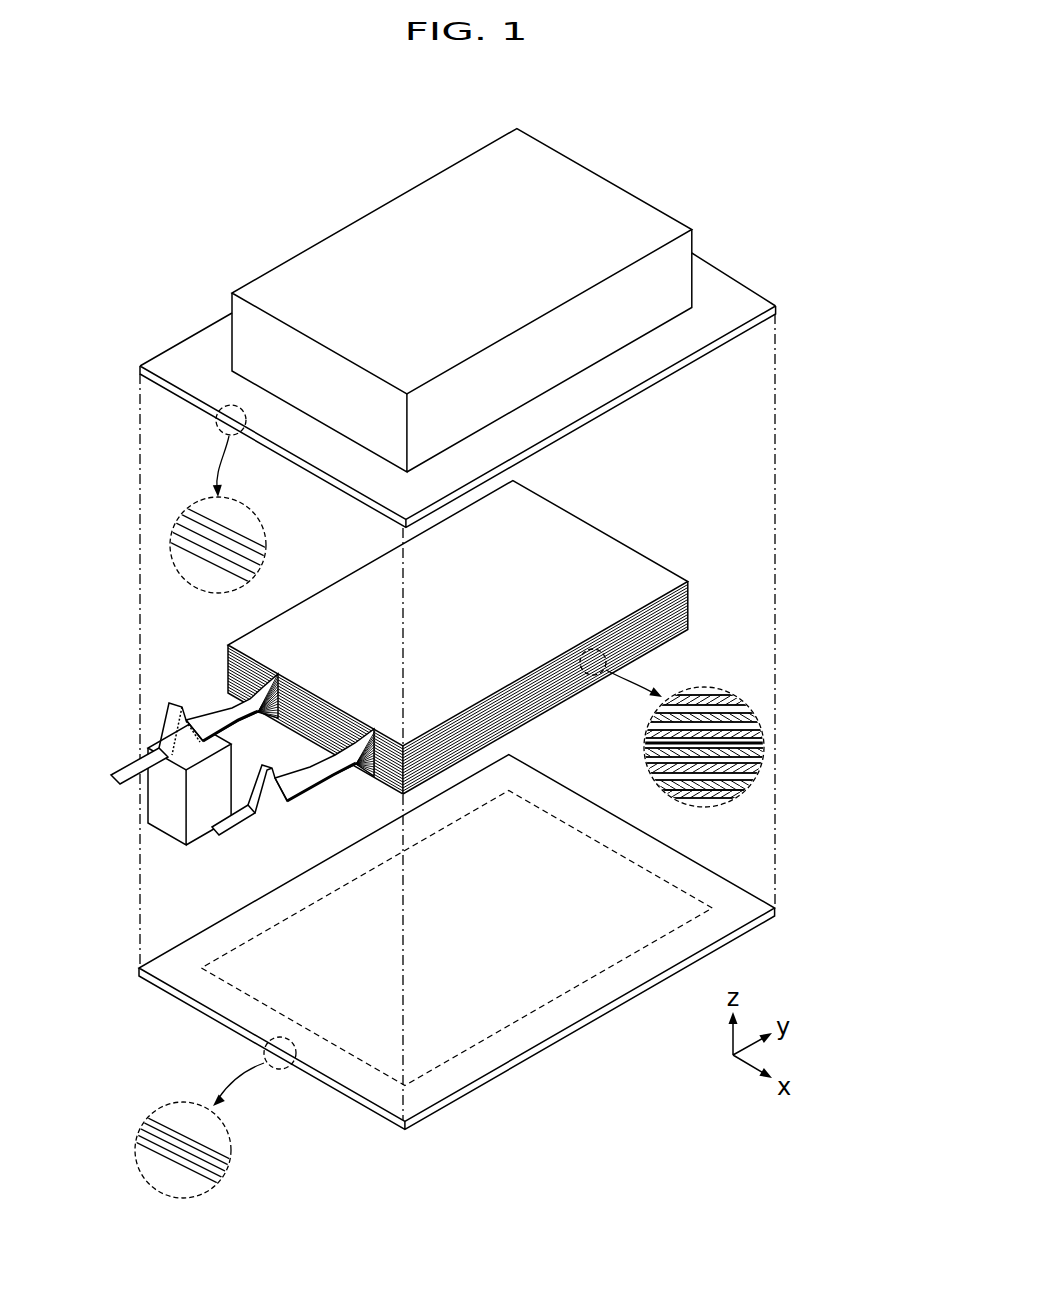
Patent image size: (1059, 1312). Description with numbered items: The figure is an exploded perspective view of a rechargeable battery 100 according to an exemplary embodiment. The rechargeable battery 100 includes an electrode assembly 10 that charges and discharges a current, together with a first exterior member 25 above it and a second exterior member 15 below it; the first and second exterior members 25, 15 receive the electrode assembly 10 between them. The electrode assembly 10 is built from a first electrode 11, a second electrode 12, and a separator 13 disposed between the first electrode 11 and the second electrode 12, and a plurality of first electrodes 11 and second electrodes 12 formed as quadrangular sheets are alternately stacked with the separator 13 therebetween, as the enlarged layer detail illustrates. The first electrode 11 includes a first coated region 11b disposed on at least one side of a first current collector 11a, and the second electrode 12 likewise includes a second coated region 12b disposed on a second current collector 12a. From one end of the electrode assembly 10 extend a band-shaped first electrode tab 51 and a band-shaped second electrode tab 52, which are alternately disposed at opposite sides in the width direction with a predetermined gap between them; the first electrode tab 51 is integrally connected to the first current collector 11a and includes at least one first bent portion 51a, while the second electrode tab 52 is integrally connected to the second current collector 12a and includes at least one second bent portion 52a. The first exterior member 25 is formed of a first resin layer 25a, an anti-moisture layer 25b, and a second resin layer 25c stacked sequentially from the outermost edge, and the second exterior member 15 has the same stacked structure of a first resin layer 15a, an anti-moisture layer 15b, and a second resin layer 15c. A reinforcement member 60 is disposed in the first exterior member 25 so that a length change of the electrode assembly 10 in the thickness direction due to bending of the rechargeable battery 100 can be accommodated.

The rechargeable battery 100 is at (261, 168).
The electrode assembly 10 is at (614, 524).
The first electrode 11 is at (824, 667).
The first current collector 11a is at (758, 716).
The first coated region 11b is at (758, 735).
The second electrode 12 is at (829, 743).
The second current collector 12a is at (760, 753).
The second coated region 12b is at (760, 760).
The separator 13 is at (648, 742).
The second exterior member 15 is at (306, 1138).
The first resin layer 15a is at (212, 1184).
The anti-moisture layer 15b is at (228, 1172).
The second resin layer 15c is at (222, 1158).
The first exterior member 25 is at (98, 453).
The first resin layer 25a is at (187, 513).
The anti-moisture layer 25b is at (183, 523).
The second resin layer 25c is at (177, 535).
The first electrode tab 51 is at (108, 798).
The first bent portion 51a is at (175, 688).
The second electrode tab 52 is at (217, 858).
The second bent portion 52a is at (296, 811).
The reinforcement member 60 is at (168, 824).